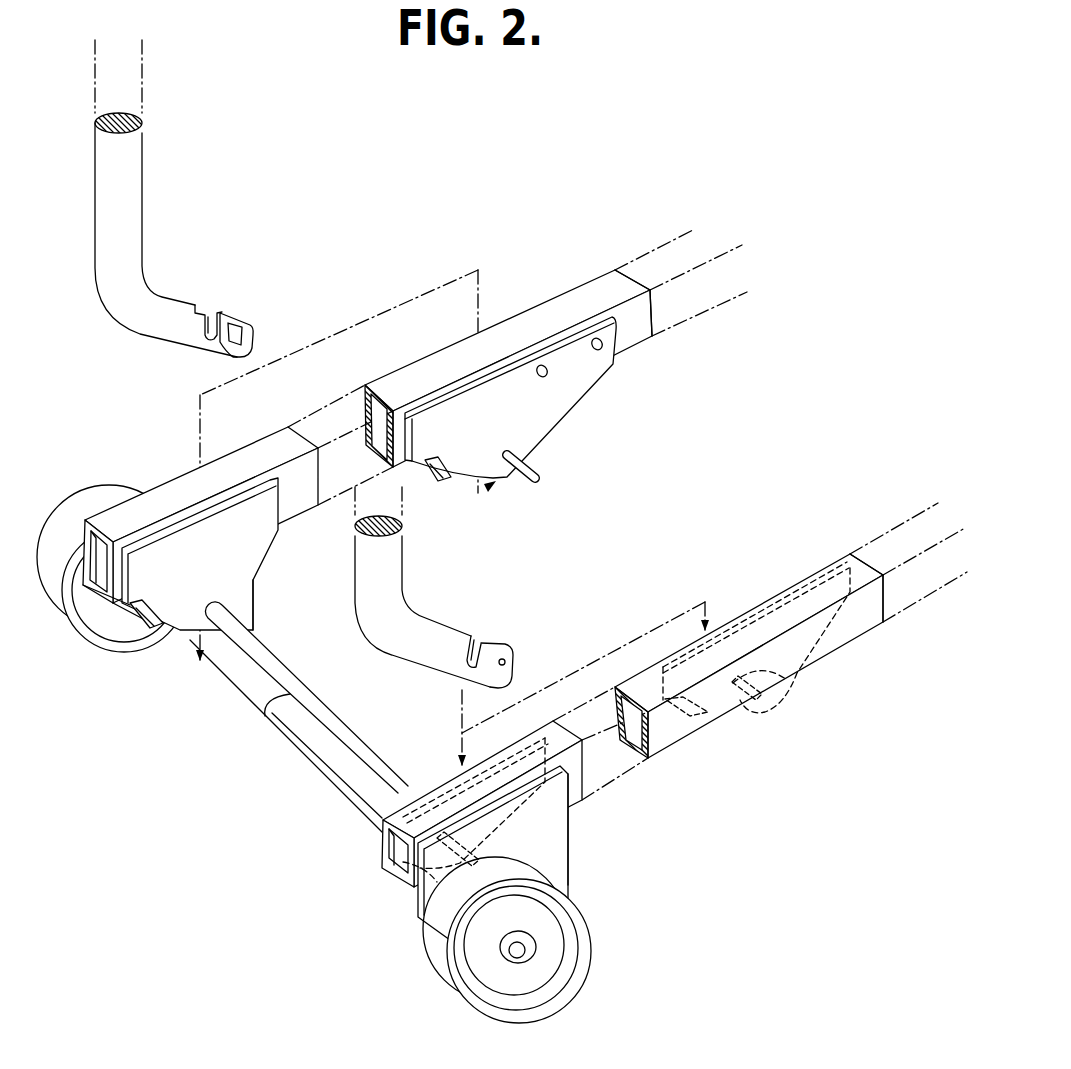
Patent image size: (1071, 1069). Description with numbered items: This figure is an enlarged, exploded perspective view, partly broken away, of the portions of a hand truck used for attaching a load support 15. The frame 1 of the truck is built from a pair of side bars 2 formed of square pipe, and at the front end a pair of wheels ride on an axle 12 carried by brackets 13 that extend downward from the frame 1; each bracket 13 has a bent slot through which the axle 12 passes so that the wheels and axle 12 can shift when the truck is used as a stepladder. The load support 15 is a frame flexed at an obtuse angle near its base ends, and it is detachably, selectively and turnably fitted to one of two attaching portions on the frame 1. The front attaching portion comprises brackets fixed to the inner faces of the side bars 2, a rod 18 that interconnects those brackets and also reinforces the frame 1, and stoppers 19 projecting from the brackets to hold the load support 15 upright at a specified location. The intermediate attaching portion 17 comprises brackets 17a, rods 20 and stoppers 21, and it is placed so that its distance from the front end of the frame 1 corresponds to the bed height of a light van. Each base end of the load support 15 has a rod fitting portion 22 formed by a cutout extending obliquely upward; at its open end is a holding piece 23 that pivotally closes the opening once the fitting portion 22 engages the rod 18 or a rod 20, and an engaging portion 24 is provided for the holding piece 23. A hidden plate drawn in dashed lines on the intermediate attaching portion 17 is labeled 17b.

The frame 1 is at (518, 305).
The side bars 2 is at (433, 353).
The axle 12 is at (312, 758).
The brackets 13 is at (247, 607).
The load support 15 is at (96, 180).
The attaching portion 17 is at (567, 330).
The brackets 17a is at (558, 407).
The rear connecting plate 17b is at (752, 718).
The rod 18 is at (268, 722).
The stoppers 19 is at (156, 633).
The rods 20 is at (542, 465).
The stoppers 21 is at (447, 482).
The rod fitting portion 22 is at (178, 333).
The holding piece 23 is at (250, 325).
The engaging portion 24 is at (206, 304).